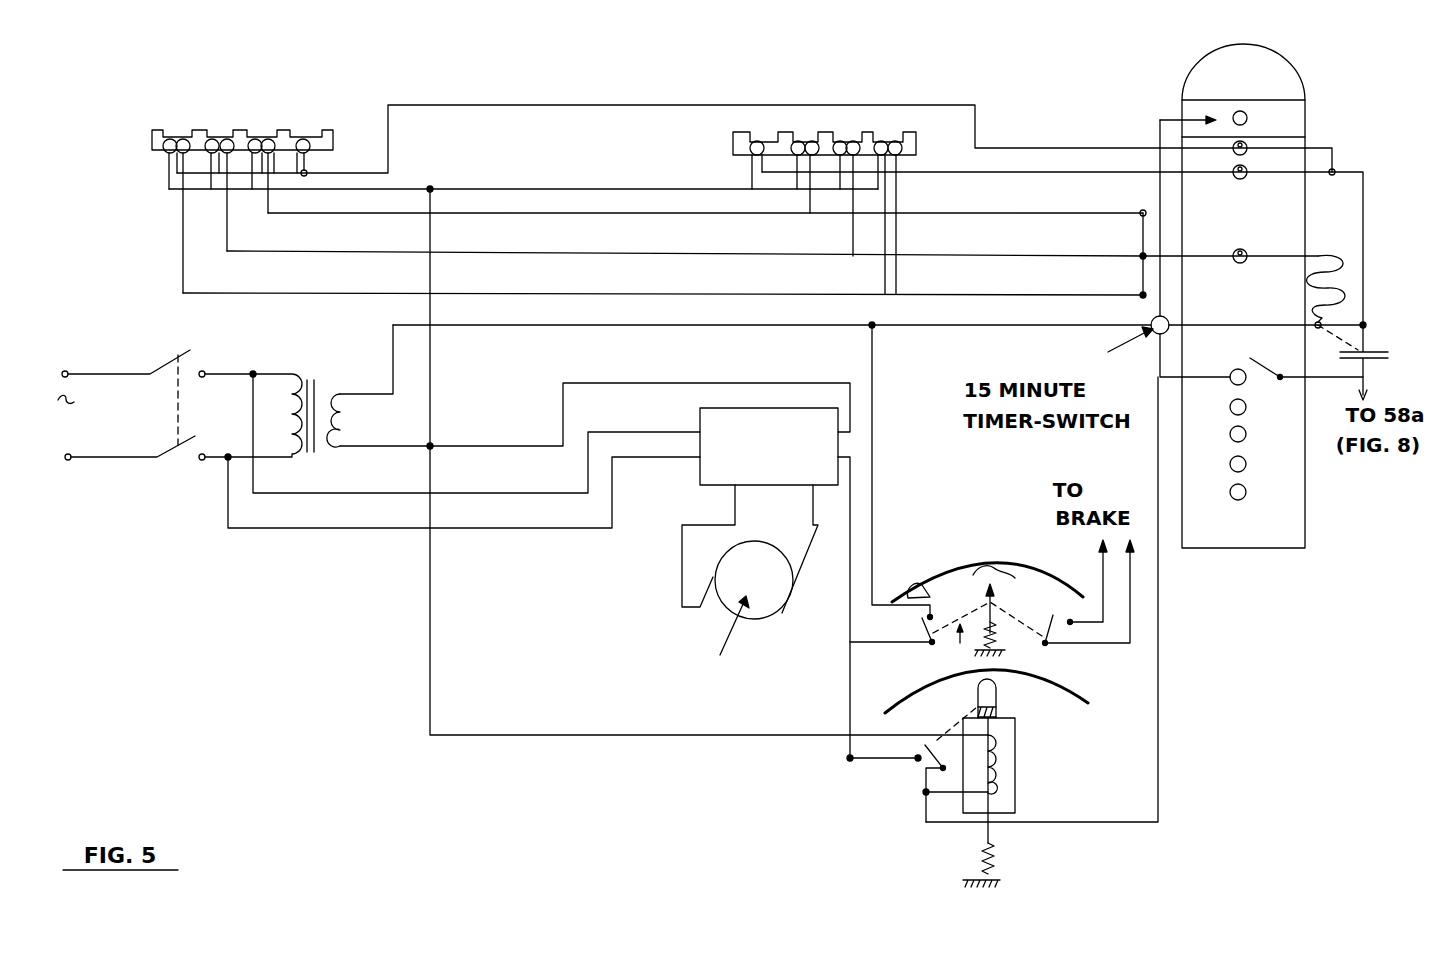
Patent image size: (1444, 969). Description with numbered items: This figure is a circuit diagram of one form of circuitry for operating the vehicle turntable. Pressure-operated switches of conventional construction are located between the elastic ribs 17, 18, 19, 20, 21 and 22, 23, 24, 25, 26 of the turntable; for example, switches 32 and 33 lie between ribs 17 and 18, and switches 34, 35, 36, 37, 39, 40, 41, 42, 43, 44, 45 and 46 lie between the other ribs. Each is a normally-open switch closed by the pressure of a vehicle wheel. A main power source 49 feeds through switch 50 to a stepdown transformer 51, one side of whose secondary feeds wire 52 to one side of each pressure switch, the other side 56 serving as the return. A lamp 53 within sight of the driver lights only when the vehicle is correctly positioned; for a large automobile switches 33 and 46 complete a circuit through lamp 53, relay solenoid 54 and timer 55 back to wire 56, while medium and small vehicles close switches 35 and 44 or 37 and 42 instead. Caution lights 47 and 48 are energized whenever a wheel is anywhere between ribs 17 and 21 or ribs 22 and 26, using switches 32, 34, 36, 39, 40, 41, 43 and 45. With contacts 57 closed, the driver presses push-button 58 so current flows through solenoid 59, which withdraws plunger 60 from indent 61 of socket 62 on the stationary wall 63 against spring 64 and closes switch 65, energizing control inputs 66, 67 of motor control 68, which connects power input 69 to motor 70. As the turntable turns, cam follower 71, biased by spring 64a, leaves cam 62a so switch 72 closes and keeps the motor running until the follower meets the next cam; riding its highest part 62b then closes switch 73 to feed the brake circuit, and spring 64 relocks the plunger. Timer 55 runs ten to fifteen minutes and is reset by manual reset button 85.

The rib 17 is at (152, 132).
The rib 18 is at (200, 131).
The rib 19 is at (240, 131).
The rib 20 is at (285, 131).
The rib 21 is at (333, 132).
The rib 22 is at (735, 133).
The rib 23 is at (787, 133).
The rib 24 is at (827, 133).
The rib 25 is at (868, 133).
The rib 26 is at (912, 133).
The pressure-operated switch 32 is at (170, 139).
The pressure-operated switch 33 is at (183, 139).
The pressure switch 34 is at (213, 139).
The pressure switch 35 is at (227, 139).
The pressure switch 36 is at (257, 139).
The pressure switch 37 is at (268, 139).
The pressure switch 39 is at (304, 139).
The pressure switch 40 is at (757, 141).
The pressure switch 41 is at (798, 141).
The pressure switch 42 is at (812, 141).
The pressure switch 43 is at (840, 141).
The pressure switch 44 is at (853, 141).
The pressure switch 45 is at (885, 160).
The pressure switch 46 is at (898, 155).
The caution light 47 is at (1246, 152).
The caution light 48 is at (1242, 180).
The main power source 49 is at (65, 371).
The switch 50 is at (182, 398).
The stepdown transformer 51 is at (313, 380).
The wire 52 is at (432, 368).
The lamp 53 is at (1240, 249).
The relay solenoid 54 is at (1342, 275).
The timer 55 is at (1166, 333).
The return wire 56 is at (363, 394).
The contacts 57 is at (1363, 351).
The manual push-button 58 is at (1252, 363).
The solenoid 59 is at (1017, 758).
The plunger 60 is at (998, 698).
The indent 61 is at (975, 682).
The socket 62 is at (1040, 688).
The cam 62a is at (985, 570).
The highest part of cam 62b is at (916, 595).
The stationary wall 63 is at (946, 572).
The spring 64 is at (1000, 858).
The spring 64a is at (1000, 640).
The switch 65 is at (947, 740).
The control input 66 is at (850, 392).
The control input 67 is at (850, 525).
The motor control 68 is at (798, 477).
The power input 69 is at (582, 528).
The motor 70 is at (780, 590).
The cam follower 71 is at (996, 597).
The switch 72 is at (906, 628).
The switch 73 is at (1050, 614).
The manual reset button 85 is at (1247, 118).